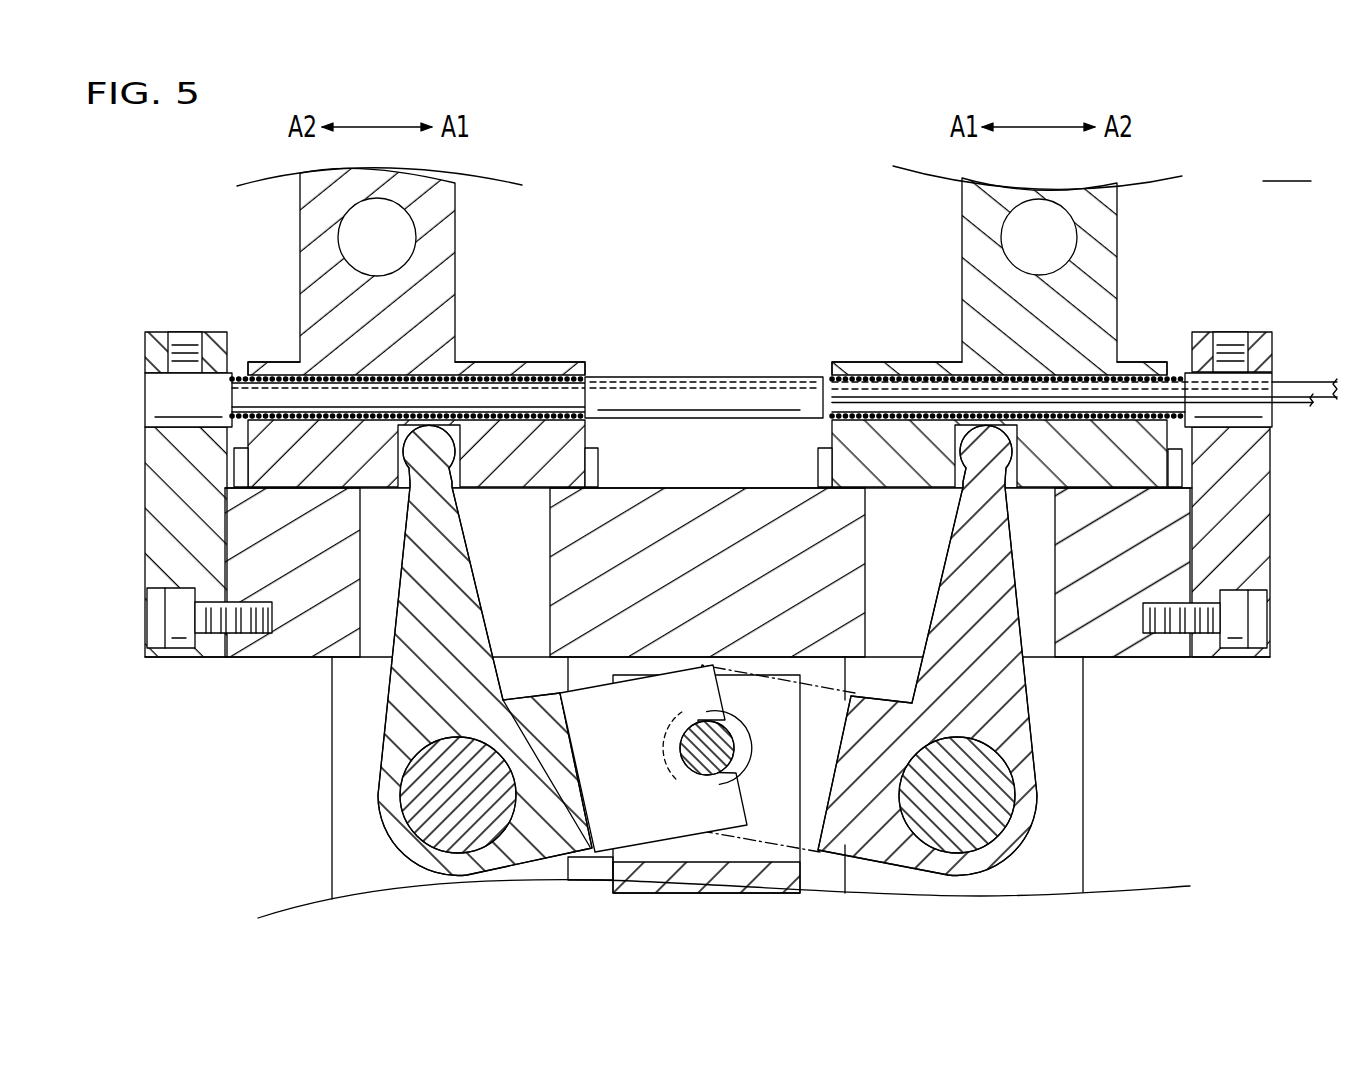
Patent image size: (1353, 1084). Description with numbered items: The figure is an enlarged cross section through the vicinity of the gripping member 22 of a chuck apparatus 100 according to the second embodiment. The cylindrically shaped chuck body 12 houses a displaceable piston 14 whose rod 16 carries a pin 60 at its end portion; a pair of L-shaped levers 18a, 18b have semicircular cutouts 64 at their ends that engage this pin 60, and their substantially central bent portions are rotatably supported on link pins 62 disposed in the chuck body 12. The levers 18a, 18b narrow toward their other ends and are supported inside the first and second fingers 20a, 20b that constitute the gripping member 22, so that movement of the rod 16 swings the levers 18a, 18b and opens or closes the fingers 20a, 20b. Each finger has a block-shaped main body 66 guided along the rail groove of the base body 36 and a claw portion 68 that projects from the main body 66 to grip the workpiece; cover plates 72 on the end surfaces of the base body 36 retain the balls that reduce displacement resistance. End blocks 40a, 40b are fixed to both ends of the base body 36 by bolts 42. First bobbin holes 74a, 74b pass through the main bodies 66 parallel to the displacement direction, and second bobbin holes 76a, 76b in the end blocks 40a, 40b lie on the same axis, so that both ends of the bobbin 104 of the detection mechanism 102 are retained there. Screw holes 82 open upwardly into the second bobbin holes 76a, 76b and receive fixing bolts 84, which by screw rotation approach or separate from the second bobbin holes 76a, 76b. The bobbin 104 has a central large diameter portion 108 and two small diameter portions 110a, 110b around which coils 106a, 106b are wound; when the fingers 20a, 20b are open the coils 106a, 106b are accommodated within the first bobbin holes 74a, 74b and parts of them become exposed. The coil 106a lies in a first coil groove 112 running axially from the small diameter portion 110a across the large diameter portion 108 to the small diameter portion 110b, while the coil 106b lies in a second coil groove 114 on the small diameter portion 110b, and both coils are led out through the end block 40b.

The chuck apparatus 100 is at (1287, 166).
The chuck body 12 is at (1083, 738).
The piston 14 is at (677, 890).
The rod 16 is at (753, 882).
The lever 18a is at (375, 822).
The lever 18b is at (1028, 828).
The first finger 20a is at (300, 228).
The second finger 20b is at (1117, 228).
The gripping member 22 is at (487, 228).
The base body 36 is at (1160, 652).
The end block 40a is at (158, 531).
The end block 40b is at (1255, 531).
The bolt 42 is at (160, 632).
The pin 60 is at (707, 758).
The link pin 62 is at (402, 790).
The cutout 64 is at (742, 740).
The main body 66 is at (492, 370).
The claw portion 68 is at (440, 253).
The cover plate 72 is at (236, 461).
The first bobbin hole 74a is at (450, 345).
The first bobbin hole 74b is at (962, 338).
The second bobbin hole 76a is at (150, 387).
The second bobbin hole 76b is at (1278, 385).
The screw hole 82 is at (173, 340).
The fixing bolt 84 is at (185, 333).
The detection mechanism 102 is at (458, 349).
The bobbin 104 is at (1053, 356).
The coil 106a is at (548, 376).
The coil 106b is at (865, 376).
The large diameter portion 108 is at (706, 370).
The small diameter portion 110a is at (563, 397).
The small diameter portion 110b is at (853, 388).
The first coil groove 112 is at (750, 380).
The second coil groove 114 is at (828, 386).